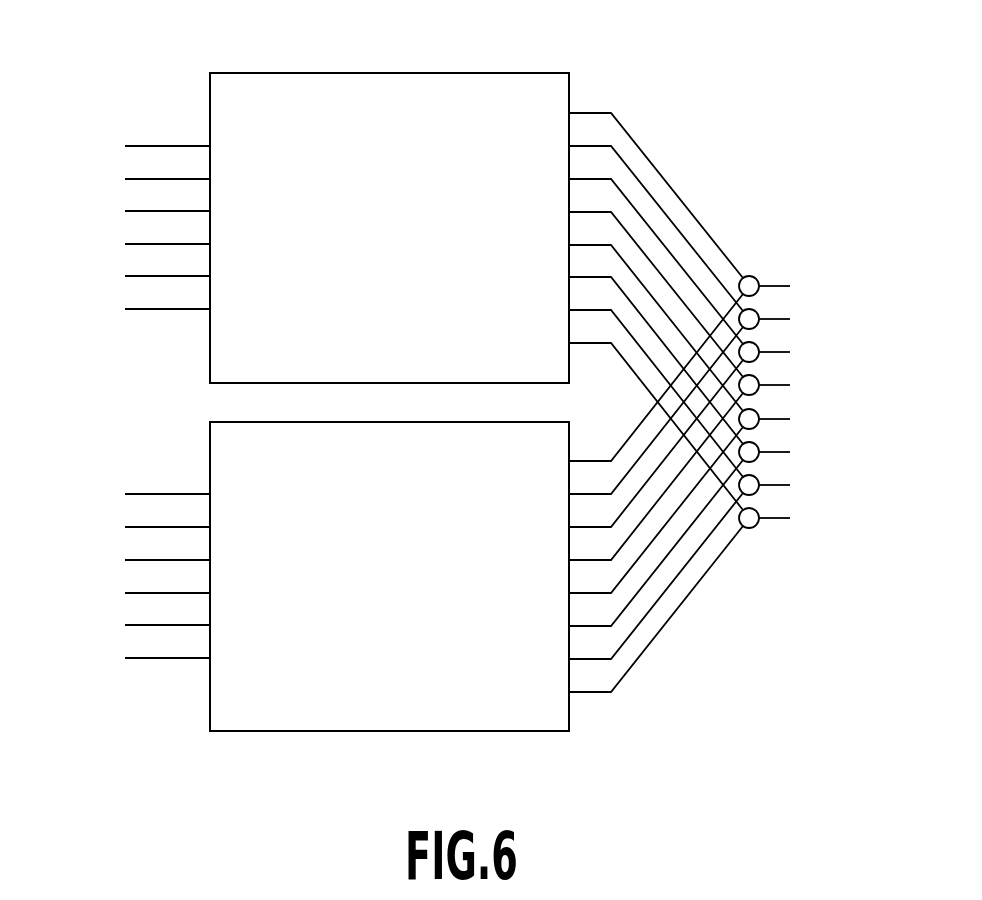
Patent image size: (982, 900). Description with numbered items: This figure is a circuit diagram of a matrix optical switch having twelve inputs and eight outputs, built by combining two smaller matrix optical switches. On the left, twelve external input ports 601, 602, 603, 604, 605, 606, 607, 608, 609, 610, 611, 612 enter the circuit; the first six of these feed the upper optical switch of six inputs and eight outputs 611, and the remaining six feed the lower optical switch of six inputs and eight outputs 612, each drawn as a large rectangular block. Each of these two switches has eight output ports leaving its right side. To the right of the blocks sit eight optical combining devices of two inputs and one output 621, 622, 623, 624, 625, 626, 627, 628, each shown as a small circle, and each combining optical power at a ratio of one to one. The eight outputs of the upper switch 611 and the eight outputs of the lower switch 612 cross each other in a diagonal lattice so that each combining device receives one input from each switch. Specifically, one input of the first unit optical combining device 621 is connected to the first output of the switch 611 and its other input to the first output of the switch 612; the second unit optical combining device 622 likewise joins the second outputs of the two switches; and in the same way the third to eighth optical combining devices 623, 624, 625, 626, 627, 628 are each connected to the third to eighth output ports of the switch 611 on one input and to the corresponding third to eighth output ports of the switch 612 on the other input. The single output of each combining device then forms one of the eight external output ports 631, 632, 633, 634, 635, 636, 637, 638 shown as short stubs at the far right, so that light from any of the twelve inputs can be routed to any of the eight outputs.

The external input port 601 is at (140, 146).
The external input port 602 is at (140, 179).
The external input port 603 is at (140, 211).
The external input port 604 is at (140, 244).
The external input port 605 is at (140, 276).
The external input port 606 is at (140, 309).
The external input port 607 is at (140, 494).
The external input port 608 is at (140, 527).
The external input port 609 is at (140, 560).
The external input port 610 is at (140, 593).
The optical switch of six inputs and eight outputs 611 is at (487, 72).
The optical switch of six inputs and eight outputs 612 is at (487, 732).
The optical combining device of two inputs and one output 621 is at (751, 276).
The optical combining device of two inputs and one output 622 is at (757, 312).
The optical combining device of two inputs and one output 623 is at (757, 345).
The optical combining device of two inputs and one output 624 is at (761, 390).
The optical combining device of two inputs and one output 625 is at (757, 426).
The optical combining device of two inputs and one output 626 is at (757, 459).
The optical combining device of two inputs and one output 627 is at (757, 492).
The optical combining device of two inputs and one output 628 is at (750, 528).
The external output port 631 is at (778, 286).
The external output port 632 is at (778, 318).
The external output port 633 is at (778, 352).
The external output port 634 is at (778, 388).
The external output port 635 is at (782, 421).
The external output port 636 is at (782, 455).
The external output port 637 is at (782, 488).
The external output port 638 is at (777, 521).